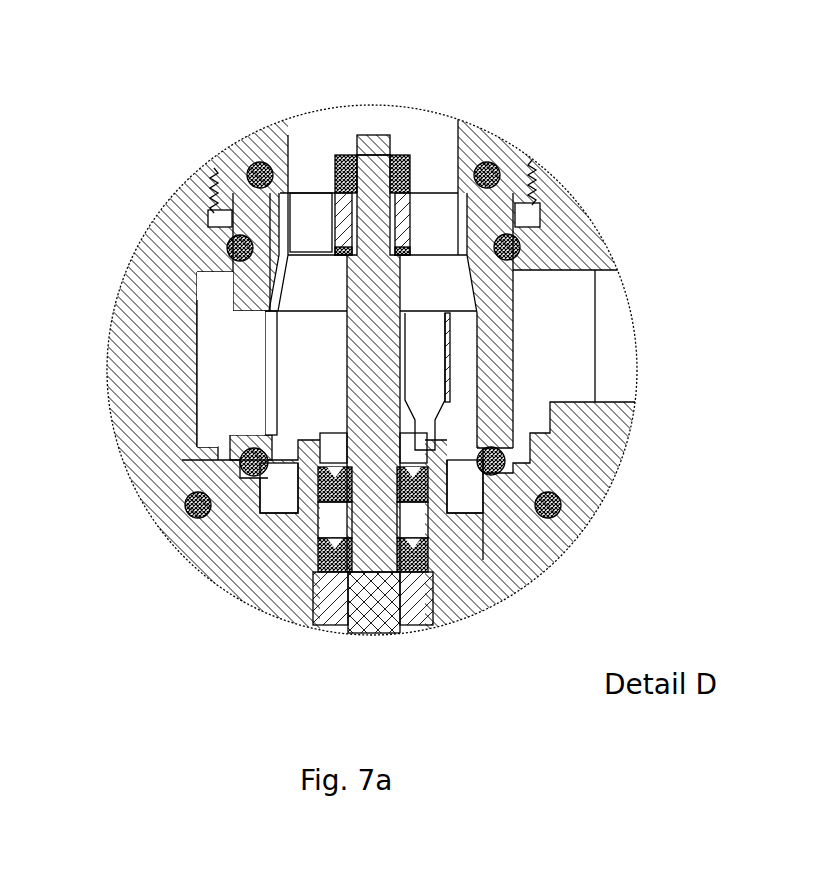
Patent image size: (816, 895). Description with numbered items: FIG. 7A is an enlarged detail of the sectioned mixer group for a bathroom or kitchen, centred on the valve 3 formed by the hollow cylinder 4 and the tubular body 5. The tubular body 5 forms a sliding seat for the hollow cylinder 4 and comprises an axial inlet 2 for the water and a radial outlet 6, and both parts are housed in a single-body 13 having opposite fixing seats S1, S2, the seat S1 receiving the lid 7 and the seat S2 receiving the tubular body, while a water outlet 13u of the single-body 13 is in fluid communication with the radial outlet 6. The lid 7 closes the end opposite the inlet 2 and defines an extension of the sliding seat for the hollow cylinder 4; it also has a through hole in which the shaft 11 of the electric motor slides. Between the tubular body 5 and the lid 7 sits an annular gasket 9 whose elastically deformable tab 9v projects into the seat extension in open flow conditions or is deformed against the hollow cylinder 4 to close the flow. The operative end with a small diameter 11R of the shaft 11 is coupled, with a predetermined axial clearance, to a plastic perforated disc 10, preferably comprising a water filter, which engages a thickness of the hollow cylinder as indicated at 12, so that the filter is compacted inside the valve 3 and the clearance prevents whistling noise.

The axial inlet 2 is at (457, 112).
The valve 3 is at (291, 132).
The hollow cylinder 4 is at (277, 135).
The tubular body 5 is at (255, 285).
The radial outlet 6 is at (210, 382).
The lid 7 is at (197, 568).
The annular gasket 9 is at (245, 467).
The elastically deformable tab 9v is at (265, 485).
The perforated disc 10 is at (316, 222).
The shaft 11 is at (378, 360).
The operative end with a small diameter 11R is at (375, 145).
The engagement of perforated disc with hollow cylinder thickness 12 is at (288, 195).
The single-body 13 is at (150, 337).
The water outlet 13u is at (195, 432).
The fixing seat S1 is at (174, 540).
The fixing seat S2 is at (200, 205).